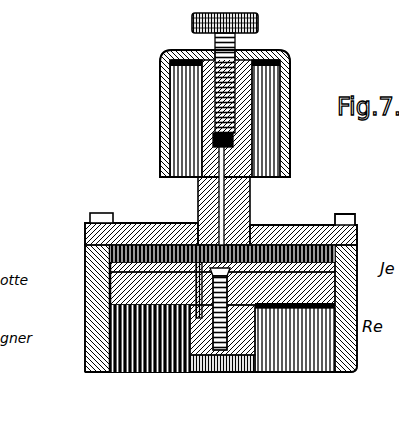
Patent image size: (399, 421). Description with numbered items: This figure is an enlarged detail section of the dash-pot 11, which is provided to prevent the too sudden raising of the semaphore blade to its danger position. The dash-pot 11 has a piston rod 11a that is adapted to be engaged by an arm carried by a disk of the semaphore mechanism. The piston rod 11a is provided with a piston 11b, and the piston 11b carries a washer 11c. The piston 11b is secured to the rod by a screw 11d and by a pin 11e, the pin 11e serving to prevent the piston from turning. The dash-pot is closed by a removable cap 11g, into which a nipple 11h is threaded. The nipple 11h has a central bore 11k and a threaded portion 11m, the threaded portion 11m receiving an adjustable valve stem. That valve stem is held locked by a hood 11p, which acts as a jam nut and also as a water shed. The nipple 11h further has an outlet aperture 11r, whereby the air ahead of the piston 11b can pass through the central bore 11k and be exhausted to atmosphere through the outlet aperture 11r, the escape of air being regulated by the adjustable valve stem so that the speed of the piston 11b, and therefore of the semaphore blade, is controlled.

The dash-pot 11 is at (358, 250).
The piston rod 11a is at (188, 343).
The piston 11b is at (118, 278).
The washer 11c is at (87, 243).
The screw 11d is at (258, 237).
The pin 11e is at (187, 247).
The removable cap 11g is at (118, 228).
The nipple 11h is at (283, 150).
The central bore 11k is at (252, 185).
The threaded portion 11m is at (270, 52).
The hood 11p is at (163, 93).
The outlet aperture 11r is at (250, 138).